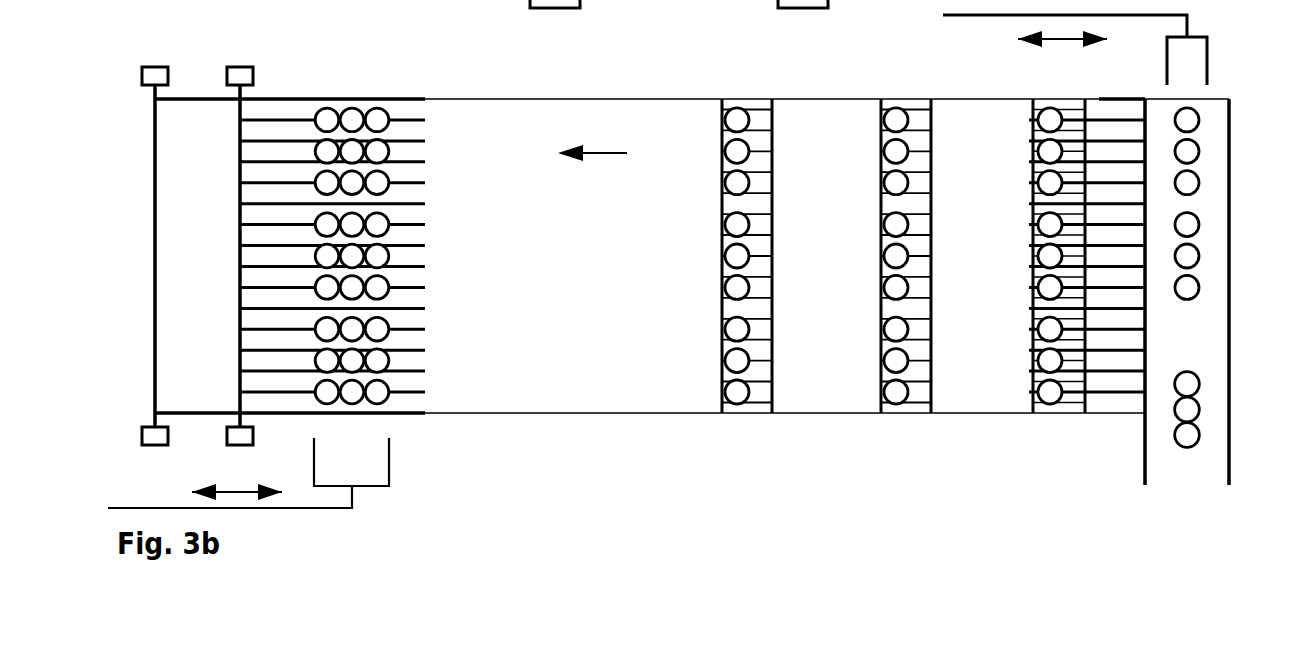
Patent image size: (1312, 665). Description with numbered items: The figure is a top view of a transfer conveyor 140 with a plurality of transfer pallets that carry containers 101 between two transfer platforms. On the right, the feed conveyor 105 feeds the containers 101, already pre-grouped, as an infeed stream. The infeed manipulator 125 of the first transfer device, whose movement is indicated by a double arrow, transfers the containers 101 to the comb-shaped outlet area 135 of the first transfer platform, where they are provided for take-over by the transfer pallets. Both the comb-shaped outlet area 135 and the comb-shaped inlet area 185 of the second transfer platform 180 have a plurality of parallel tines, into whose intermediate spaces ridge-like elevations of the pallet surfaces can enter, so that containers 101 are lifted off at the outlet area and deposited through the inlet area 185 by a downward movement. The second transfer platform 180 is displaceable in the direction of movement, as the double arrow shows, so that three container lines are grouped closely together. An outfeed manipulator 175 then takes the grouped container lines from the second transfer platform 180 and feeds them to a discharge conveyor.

The containers 101 is at (1200, 150).
The feed conveyor 105 is at (1232, 351).
The infeed manipulator 125 is at (1198, 33).
The comb-shaped outlet area 135 is at (1067, 97).
The transfer conveyor 140 is at (533, 458).
The outfeed manipulator 175 is at (353, 498).
The second transfer platform 180 is at (155, 255).
The comb-shaped inlet area 185 is at (350, 97).